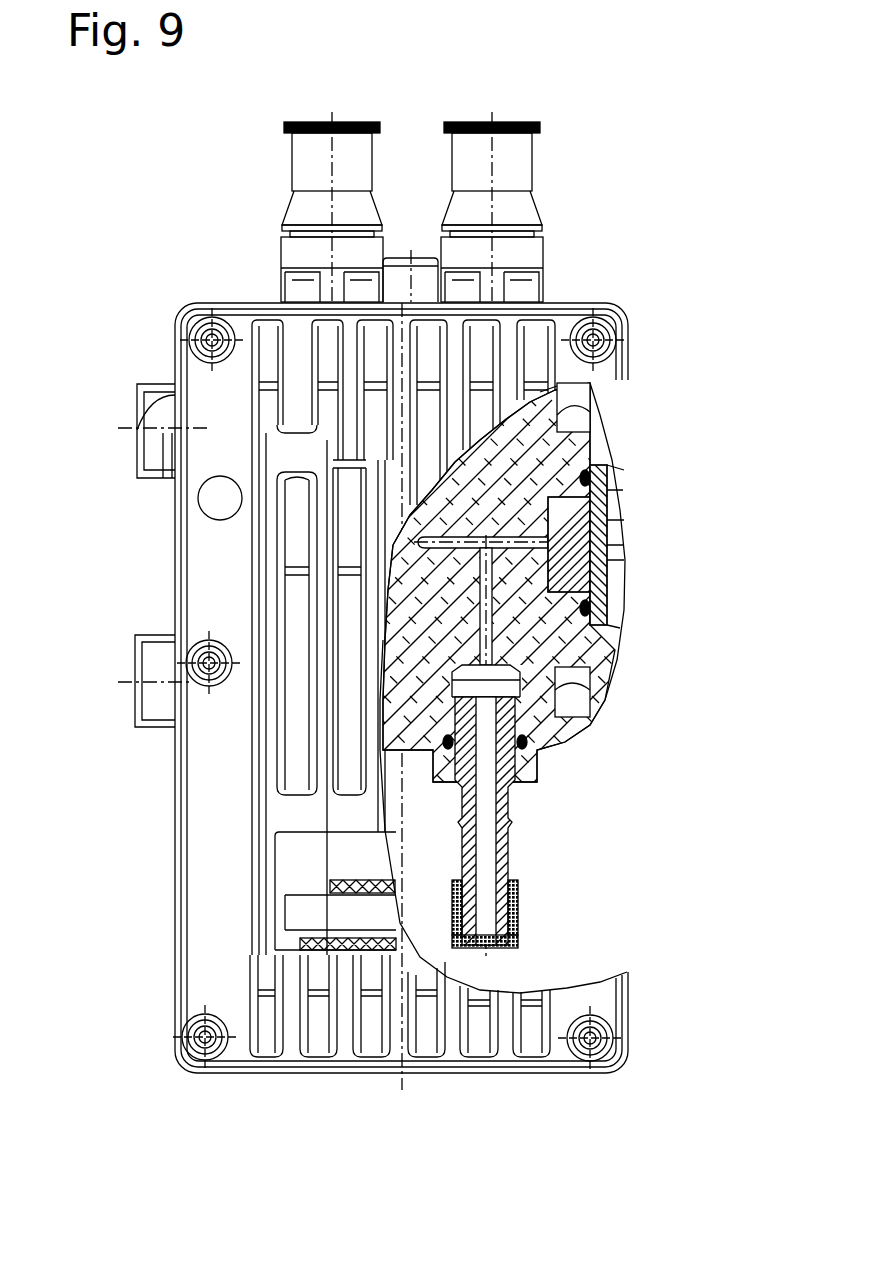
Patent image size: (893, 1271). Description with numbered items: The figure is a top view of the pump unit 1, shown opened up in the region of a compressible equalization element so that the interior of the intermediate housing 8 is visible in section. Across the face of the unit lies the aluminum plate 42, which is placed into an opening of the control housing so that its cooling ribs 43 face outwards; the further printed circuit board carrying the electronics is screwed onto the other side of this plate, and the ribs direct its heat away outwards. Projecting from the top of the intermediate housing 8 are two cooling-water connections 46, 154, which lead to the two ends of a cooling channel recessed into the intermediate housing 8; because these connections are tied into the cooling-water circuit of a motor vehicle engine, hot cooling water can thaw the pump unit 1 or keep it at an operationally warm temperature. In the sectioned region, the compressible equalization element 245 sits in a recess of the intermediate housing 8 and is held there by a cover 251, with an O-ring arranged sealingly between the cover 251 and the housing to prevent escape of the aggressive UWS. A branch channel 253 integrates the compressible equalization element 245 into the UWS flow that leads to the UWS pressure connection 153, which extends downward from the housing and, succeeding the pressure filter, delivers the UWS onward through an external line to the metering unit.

The pump unit 1 is at (628, 744).
The intermediate housing 8 is at (548, 462).
The aluminum plate 42 is at (215, 840).
The cooling ribs 43 is at (347, 537).
The cooling-water connection 46 is at (305, 179).
The UWS pressure connection 153 is at (513, 767).
The cooling-water connection 154 is at (515, 182).
The compressible equalization element 245 is at (577, 509).
The cover 251 is at (597, 578).
The branch channel 253 is at (518, 540).